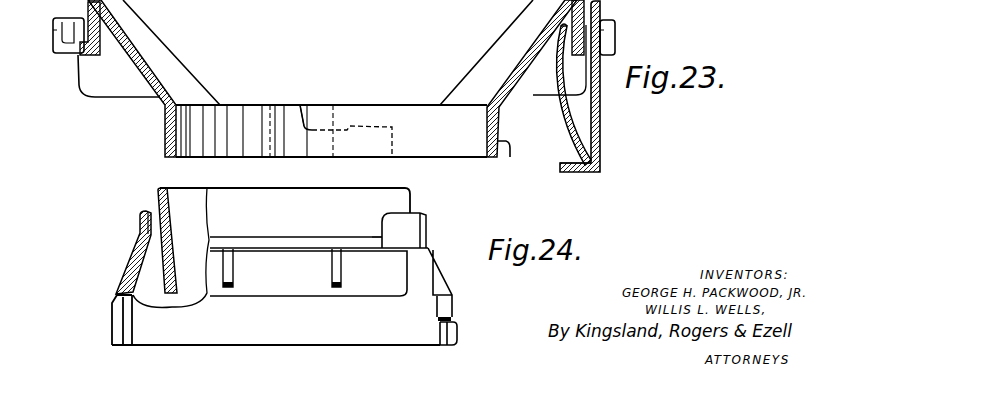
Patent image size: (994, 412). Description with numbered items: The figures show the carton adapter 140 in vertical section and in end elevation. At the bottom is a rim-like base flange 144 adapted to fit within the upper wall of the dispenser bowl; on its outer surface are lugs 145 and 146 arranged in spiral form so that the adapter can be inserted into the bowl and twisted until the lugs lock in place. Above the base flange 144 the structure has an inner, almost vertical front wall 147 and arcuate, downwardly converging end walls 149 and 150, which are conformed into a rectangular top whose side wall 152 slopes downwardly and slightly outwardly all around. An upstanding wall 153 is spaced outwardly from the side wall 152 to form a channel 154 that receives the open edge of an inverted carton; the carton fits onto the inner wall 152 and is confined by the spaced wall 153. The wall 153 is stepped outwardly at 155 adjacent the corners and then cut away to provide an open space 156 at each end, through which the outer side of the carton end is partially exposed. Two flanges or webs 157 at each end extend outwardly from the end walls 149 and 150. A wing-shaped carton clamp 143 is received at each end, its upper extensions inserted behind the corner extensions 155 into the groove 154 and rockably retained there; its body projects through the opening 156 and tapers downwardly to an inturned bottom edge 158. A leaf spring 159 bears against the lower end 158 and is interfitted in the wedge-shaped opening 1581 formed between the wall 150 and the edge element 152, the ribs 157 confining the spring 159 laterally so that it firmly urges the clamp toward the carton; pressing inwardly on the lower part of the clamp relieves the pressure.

In FIG. 23, the adapter 140 is at (499, 163).
In FIG. 24, the adapter 140 is at (462, 284).
In FIG. 23, the carton clamp 143 is at (606, 133).
In FIG. 23, the base flange 144 is at (503, 150).
In FIG. 24, the base flange 144 is at (455, 347).
In FIG. 23, the lug 145 is at (319, 103).
In FIG. 24, the lug 145 is at (455, 316).
In FIG. 24, the lug 146 is at (115, 297).
In FIG. 24, the front wall 147 is at (167, 212).
In FIG. 23, the end wall 149 is at (153, 70).
In FIG. 24, the end wall 149 is at (198, 190).
In FIG. 23, the end wall 150 is at (533, 53).
In FIG. 24, the end wall 150 is at (290, 282).
In FIG. 24, the side wall 152 is at (158, 193).
In FIG. 24, the upstanding wall 153 is at (140, 231).
In FIG. 23, the channel 154 is at (605, 28).
In FIG. 24, the channel 154 is at (150, 212).
In FIG. 23, the outward step 155 is at (75, 18).
In FIG. 24, the outward step 155 is at (412, 223).
In FIG. 23, the open space 156 is at (63, 53).
In FIG. 24, the open space 156 is at (372, 236).
In FIG. 23, the flange 157 is at (103, 85).
In FIG. 24, the flange 157 is at (234, 268).
In FIG. 23, the inturned bottom edge 158 is at (573, 175).
In FIG. 23, the leaf spring 159 is at (567, 118).
In FIG. 23, the wedge-shaped opening 1581 is at (560, 30).